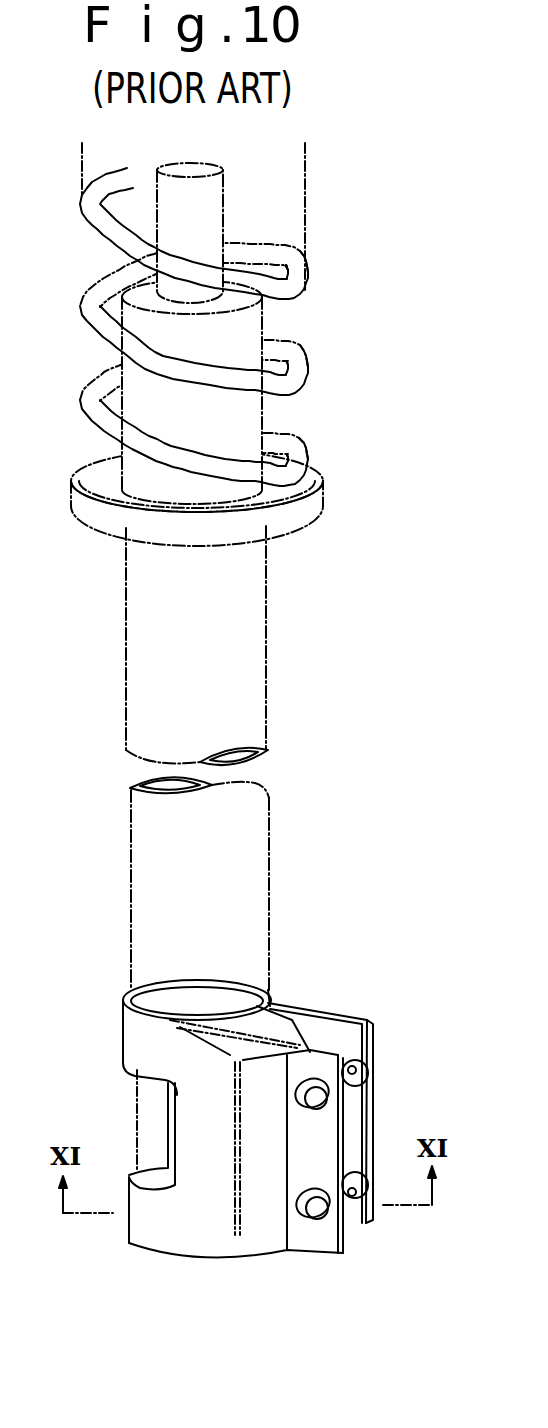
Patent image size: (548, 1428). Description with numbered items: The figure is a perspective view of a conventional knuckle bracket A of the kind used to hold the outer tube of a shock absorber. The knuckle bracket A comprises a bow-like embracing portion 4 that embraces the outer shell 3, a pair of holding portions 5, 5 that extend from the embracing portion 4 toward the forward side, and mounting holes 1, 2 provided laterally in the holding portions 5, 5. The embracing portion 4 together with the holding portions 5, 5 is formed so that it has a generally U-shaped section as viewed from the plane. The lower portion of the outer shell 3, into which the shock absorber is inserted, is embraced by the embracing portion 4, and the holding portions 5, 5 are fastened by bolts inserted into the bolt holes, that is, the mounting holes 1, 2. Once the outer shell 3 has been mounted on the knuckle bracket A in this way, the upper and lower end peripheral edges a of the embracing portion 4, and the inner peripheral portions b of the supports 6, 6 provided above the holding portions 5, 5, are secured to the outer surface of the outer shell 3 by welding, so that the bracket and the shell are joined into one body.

The mounting hole 1 is at (367, 1033).
The mounting hole 2 is at (353, 1227).
The outer shell 3 is at (263, 843).
The embracing portion 4 is at (187, 1237).
The holding portion 5 is at (360, 1127).
The support 6 is at (302, 1004).
The upper and lower end peripheral edges a is at (127, 992).
The inner peripheral portion b is at (270, 1000).
The knuckle bracket A is at (237, 1107).